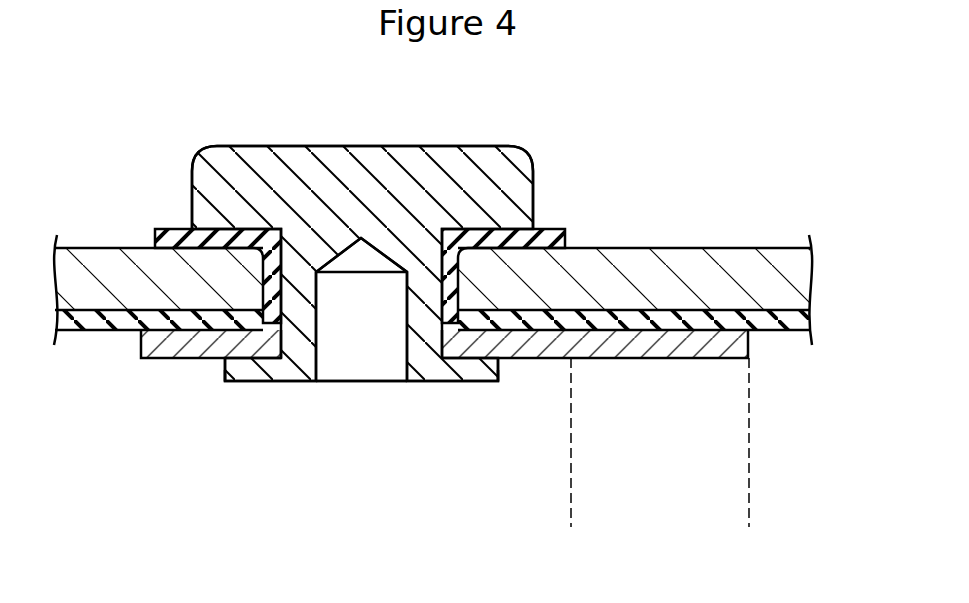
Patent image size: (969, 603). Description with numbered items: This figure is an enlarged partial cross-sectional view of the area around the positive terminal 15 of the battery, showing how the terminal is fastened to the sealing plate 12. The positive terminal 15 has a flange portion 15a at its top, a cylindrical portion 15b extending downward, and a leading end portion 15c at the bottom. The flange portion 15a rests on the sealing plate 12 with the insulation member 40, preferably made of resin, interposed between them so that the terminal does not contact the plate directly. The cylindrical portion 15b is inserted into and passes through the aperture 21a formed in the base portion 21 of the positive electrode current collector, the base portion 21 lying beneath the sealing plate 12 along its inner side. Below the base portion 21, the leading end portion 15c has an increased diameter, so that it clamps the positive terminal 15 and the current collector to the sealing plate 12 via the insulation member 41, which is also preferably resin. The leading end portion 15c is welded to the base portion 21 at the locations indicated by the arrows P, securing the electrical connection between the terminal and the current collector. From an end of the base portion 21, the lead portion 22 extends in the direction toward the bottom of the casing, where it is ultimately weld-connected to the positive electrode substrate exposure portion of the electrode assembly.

The sealing plate 12 is at (690, 265).
The insulation member 41 is at (88, 322).
The base portion 21 is at (157, 352).
The aperture 21a is at (283, 345).
The insulation member 40 is at (548, 228).
The positive terminal 15 is at (370, 158).
The flange portion 15a is at (230, 170).
The cylindrical portion 15b is at (418, 318).
The leading end portion 15c is at (253, 383).
The arrows P is at (233, 382).
The lead portion 22 is at (733, 433).